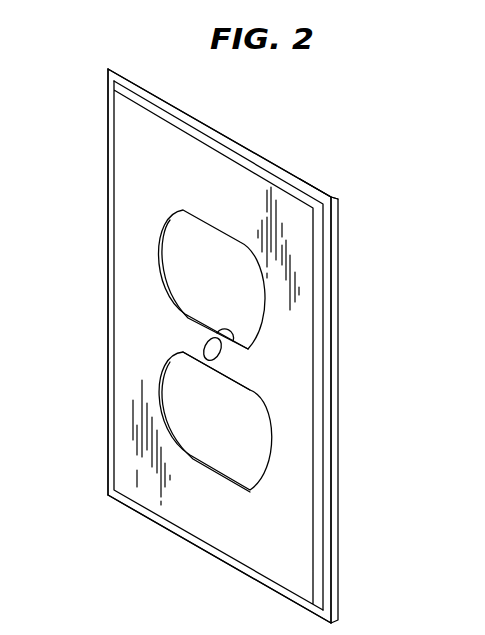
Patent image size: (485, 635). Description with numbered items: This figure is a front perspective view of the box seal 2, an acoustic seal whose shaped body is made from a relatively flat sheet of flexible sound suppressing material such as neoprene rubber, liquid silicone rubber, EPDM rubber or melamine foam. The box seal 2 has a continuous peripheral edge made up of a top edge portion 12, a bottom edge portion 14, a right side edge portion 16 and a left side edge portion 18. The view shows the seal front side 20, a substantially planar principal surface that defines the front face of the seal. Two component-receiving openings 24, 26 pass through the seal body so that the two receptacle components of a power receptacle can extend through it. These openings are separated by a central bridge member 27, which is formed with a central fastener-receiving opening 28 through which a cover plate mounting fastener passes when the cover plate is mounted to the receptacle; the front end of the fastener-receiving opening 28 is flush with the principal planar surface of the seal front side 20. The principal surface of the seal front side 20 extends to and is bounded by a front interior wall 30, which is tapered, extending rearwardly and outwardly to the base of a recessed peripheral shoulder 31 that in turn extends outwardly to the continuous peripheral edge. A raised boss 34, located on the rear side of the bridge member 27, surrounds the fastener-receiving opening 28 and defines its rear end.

The box seal 2 is at (338, 162).
The top edge portion 12 is at (247, 148).
The bottom edge portion 14 is at (184, 539).
The right side edge portion 16 is at (338, 386).
The left side edge portion 18 is at (107, 293).
The seal front side 20 is at (137, 156).
The component-receiving opening 24 is at (208, 226).
The component-receiving opening 26 is at (255, 406).
The central bridge member 27 is at (237, 365).
The fastener-receiving opening 28 is at (205, 343).
The front interior wall 30 is at (320, 262).
The recessed peripheral shoulder 31 is at (329, 216).
The raised boss 34 is at (226, 328).